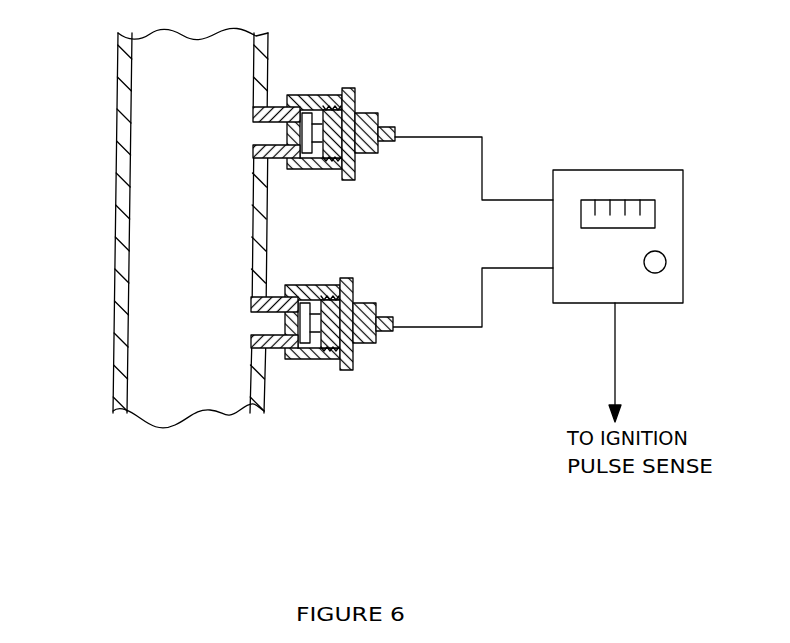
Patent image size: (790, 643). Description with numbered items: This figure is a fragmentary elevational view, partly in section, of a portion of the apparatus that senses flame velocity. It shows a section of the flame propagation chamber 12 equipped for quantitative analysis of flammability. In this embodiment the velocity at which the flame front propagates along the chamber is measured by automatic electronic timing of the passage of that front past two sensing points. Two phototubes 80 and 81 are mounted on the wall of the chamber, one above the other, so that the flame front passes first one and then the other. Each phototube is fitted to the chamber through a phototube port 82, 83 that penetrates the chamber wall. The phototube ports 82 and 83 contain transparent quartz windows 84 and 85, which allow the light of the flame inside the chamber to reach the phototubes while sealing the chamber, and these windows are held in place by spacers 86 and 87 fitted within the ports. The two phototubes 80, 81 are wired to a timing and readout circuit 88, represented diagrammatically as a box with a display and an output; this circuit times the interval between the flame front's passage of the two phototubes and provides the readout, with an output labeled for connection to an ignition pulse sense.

The flame propagation chamber 12 is at (115, 224).
The phototube 80 is at (375, 113).
The phototube 81 is at (384, 316).
The phototube port 82 is at (307, 97).
The phototube port 83 is at (312, 297).
The transparent quartz window 84 is at (247, 322).
The transparent quartz window 85 is at (251, 132).
The spacer 86 is at (320, 148).
The spacer 87 is at (316, 350).
The timing and readout circuit 88 is at (603, 184).